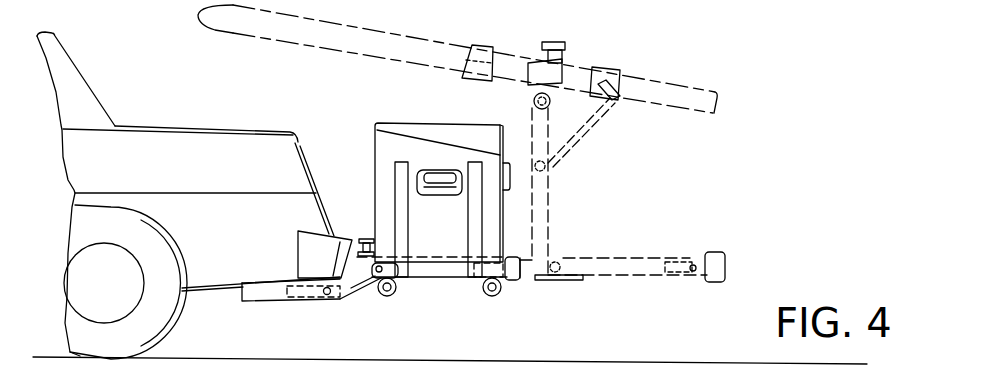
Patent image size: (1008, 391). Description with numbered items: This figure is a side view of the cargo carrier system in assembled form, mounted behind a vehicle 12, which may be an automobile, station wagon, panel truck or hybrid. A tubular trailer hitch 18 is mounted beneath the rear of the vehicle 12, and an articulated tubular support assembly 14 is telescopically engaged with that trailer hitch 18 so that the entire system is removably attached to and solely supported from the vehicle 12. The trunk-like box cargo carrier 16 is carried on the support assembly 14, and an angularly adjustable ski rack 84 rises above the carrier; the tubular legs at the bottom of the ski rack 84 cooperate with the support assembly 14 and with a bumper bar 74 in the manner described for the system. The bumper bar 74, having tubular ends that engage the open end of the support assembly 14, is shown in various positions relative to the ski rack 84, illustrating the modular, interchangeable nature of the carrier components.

The vehicle 12 is at (225, 143).
The support assembly 14 is at (348, 285).
The cargo carrier 16 is at (372, 155).
The trailer hitch 18 is at (267, 293).
The bumper bar 74 is at (511, 281).
The ski rack 84 is at (637, 72).